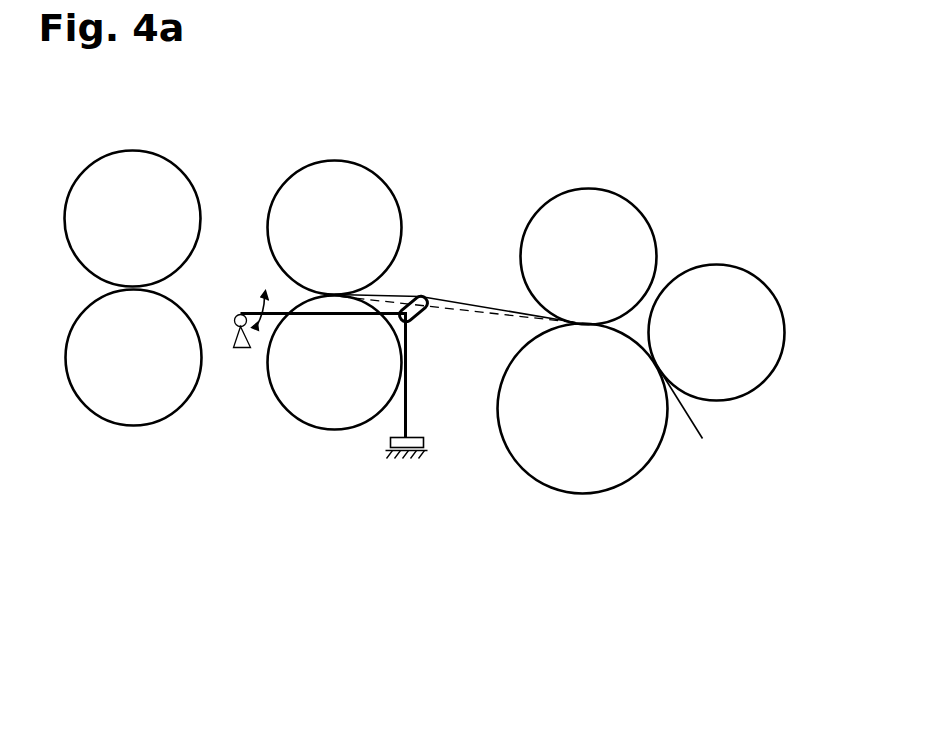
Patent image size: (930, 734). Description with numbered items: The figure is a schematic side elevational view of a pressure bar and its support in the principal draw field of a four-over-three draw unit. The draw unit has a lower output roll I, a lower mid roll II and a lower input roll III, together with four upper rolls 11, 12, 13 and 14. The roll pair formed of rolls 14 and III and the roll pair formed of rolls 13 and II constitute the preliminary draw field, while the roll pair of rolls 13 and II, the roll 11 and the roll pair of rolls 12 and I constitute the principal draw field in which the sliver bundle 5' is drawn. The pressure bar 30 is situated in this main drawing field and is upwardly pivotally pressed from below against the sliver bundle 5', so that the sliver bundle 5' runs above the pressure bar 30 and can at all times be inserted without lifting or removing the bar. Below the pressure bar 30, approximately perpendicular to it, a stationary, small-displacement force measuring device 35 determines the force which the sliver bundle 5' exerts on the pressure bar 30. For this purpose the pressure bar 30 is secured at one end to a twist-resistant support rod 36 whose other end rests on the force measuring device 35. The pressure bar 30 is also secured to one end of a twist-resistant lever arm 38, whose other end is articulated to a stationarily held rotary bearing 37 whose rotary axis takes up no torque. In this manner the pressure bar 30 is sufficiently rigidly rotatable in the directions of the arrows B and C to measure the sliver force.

The upper roll 14 is at (125, 200).
The upper roll 13 is at (328, 202).
The upper roll 12 is at (605, 237).
The upper roll 11 is at (742, 337).
The lower output roll I is at (595, 422).
The lower mid roll II is at (350, 397).
The lower input roll III is at (115, 377).
The sliver bundle 5' is at (455, 253).
The pressure bar 30 is at (418, 300).
The force measuring device 35 is at (427, 443).
The support rod 36 is at (407, 387).
The rotary bearing 37 is at (233, 347).
The lever arm 38 is at (278, 297).
The arrow B is at (258, 303).
The arrow C is at (266, 328).